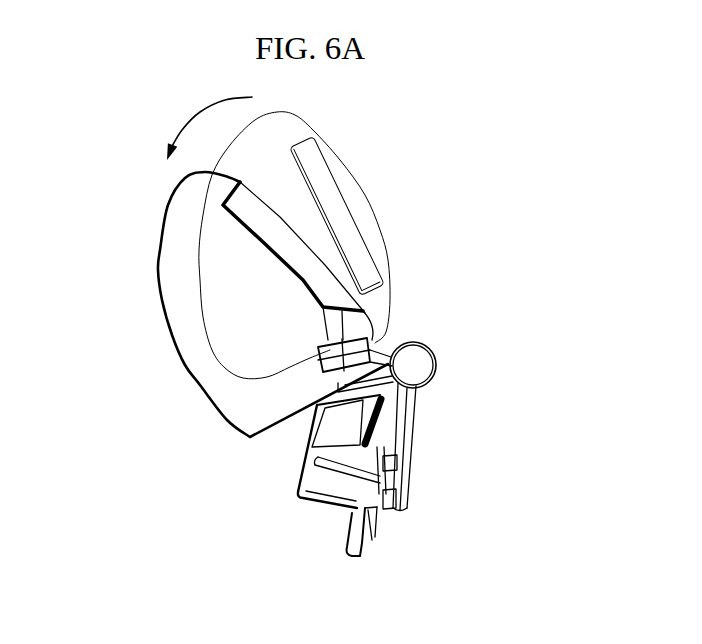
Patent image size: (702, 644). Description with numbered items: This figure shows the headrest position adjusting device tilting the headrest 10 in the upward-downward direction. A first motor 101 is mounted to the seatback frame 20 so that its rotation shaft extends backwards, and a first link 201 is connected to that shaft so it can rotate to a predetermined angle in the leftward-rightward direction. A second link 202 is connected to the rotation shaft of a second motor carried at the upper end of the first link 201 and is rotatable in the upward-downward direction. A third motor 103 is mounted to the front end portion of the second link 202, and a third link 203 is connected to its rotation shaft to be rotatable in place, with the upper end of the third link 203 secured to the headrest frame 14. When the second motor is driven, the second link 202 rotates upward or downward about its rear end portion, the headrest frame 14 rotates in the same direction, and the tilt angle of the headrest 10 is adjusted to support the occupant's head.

The headrest 10 is at (146, 250).
The headrest frame 14 is at (288, 237).
The third link 203 is at (356, 322).
The third motor 103 is at (388, 348).
The second link 202 is at (447, 356).
The first link 201 is at (434, 433).
The seatback frame 20 is at (327, 433).
The first motor 101 is at (385, 505).